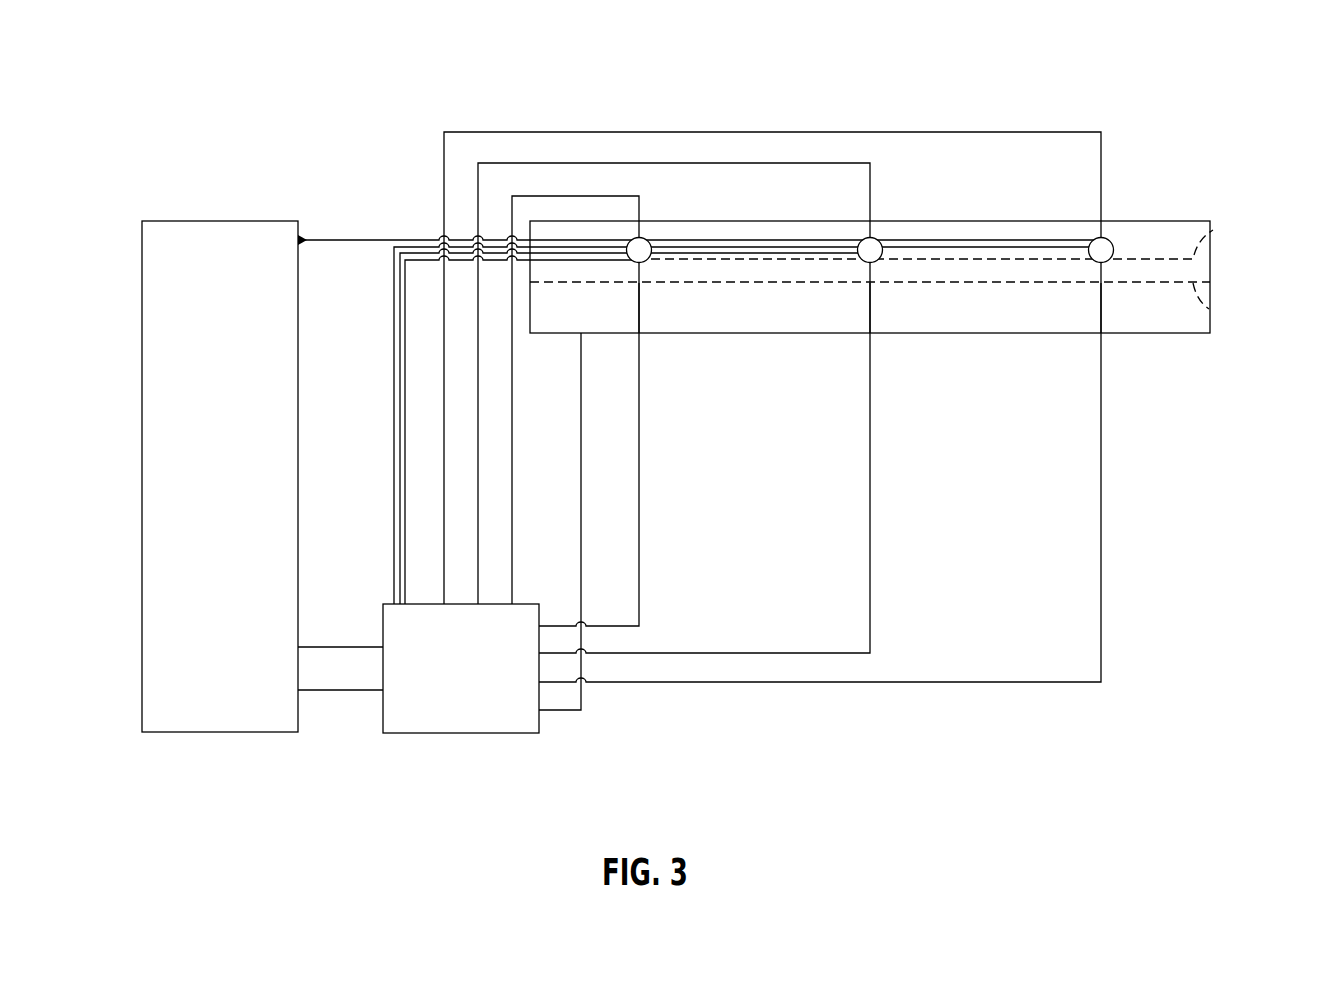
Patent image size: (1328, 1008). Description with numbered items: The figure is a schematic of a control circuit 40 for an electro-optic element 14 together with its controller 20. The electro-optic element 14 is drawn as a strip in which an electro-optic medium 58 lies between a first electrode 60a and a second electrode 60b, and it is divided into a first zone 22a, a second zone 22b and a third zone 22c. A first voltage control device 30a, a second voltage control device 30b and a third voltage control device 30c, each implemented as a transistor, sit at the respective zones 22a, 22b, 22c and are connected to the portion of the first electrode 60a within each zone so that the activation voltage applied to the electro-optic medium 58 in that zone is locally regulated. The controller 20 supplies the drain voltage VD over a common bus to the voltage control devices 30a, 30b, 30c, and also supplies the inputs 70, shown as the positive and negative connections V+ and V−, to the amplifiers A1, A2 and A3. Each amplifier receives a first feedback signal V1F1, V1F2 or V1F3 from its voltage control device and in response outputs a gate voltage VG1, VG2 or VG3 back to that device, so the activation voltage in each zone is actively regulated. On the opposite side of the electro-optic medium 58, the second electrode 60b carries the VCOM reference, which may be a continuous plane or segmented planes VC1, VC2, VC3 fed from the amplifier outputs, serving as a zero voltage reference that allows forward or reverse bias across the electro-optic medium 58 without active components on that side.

The control circuit 40 is at (247, 88).
The controller 20 is at (170, 220).
The inputs 70 is at (336, 757).
The electro-optic element 14 is at (913, 331).
The first voltage control device 30a is at (648, 240).
The second voltage control device 30b is at (879, 240).
The third voltage control device 30c is at (1110, 240).
The first zone 22a is at (657, 304).
The second zone 22b is at (888, 304).
The third zone 22c is at (1119, 304).
The electro-optic medium 58 is at (1197, 272).
The first electrode 60a is at (1215, 229).
The second electrode 60b is at (1210, 310).